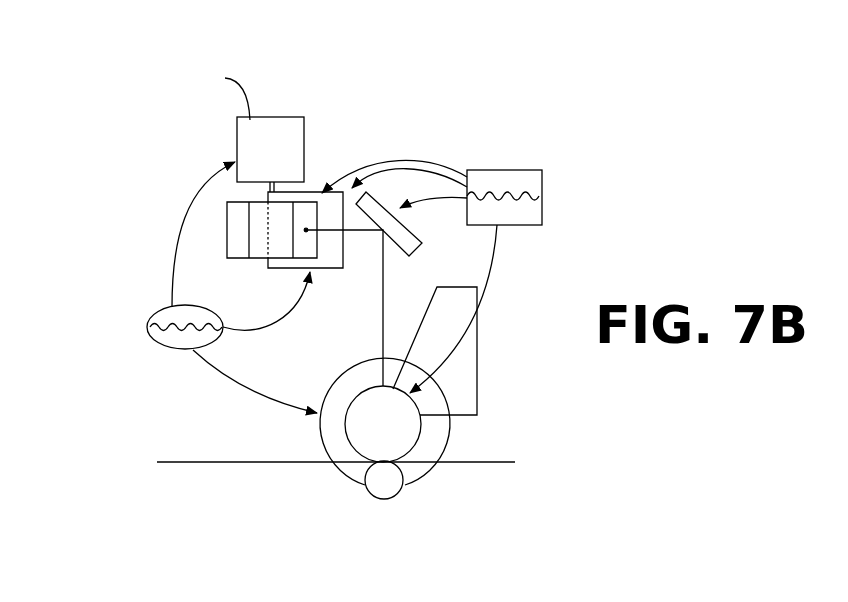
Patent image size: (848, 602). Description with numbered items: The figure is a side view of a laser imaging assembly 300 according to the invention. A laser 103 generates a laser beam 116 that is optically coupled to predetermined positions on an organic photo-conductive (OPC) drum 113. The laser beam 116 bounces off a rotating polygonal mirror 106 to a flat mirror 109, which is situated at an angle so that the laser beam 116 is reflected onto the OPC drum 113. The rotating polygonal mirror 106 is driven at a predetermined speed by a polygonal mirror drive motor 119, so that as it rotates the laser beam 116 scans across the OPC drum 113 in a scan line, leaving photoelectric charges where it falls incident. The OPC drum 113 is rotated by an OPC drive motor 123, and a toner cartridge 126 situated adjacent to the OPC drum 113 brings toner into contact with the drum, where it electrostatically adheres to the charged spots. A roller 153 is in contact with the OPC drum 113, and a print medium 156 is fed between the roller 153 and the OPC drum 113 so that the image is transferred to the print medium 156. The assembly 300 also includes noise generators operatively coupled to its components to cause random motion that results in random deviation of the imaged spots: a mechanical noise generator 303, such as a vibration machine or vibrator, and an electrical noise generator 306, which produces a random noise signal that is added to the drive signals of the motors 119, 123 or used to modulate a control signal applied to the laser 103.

The laser imaging assembly 300 is at (600, 495).
The polygonal mirror drive motor 119 is at (272, 115).
The laser 103 is at (307, 188).
The rotating polygonal mirror 106 is at (225, 238).
The flat mirror 109 is at (420, 228).
The laser beam 116 is at (382, 333).
The mechanical noise generator 303 is at (503, 167).
The electrical noise generator 306 is at (145, 325).
The toner cartridge 126 is at (482, 376).
The organic photo-conductive (OPC) drum 113 is at (422, 437).
The OPC drive motor 123 is at (338, 477).
The roller 153 is at (380, 502).
The print medium 156 is at (220, 465).